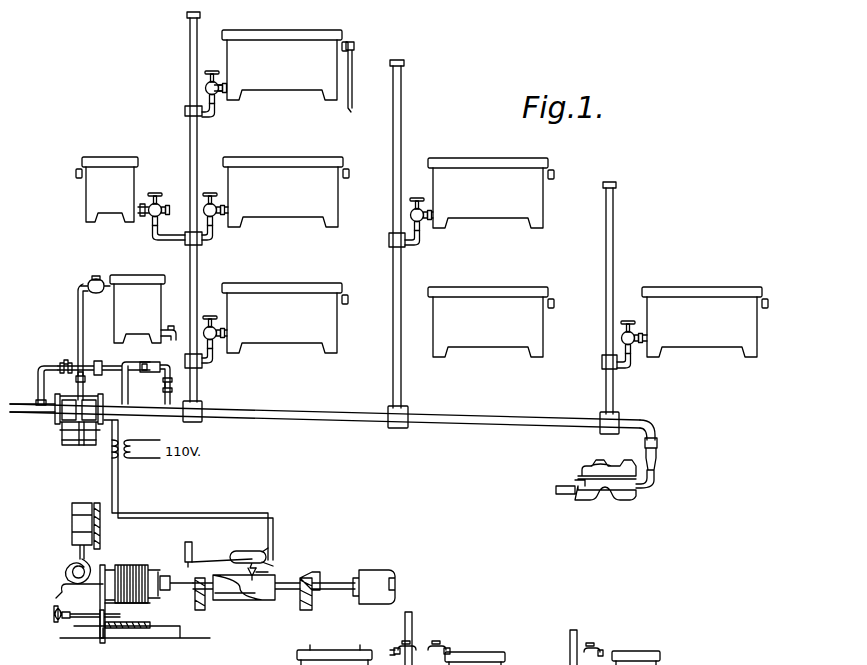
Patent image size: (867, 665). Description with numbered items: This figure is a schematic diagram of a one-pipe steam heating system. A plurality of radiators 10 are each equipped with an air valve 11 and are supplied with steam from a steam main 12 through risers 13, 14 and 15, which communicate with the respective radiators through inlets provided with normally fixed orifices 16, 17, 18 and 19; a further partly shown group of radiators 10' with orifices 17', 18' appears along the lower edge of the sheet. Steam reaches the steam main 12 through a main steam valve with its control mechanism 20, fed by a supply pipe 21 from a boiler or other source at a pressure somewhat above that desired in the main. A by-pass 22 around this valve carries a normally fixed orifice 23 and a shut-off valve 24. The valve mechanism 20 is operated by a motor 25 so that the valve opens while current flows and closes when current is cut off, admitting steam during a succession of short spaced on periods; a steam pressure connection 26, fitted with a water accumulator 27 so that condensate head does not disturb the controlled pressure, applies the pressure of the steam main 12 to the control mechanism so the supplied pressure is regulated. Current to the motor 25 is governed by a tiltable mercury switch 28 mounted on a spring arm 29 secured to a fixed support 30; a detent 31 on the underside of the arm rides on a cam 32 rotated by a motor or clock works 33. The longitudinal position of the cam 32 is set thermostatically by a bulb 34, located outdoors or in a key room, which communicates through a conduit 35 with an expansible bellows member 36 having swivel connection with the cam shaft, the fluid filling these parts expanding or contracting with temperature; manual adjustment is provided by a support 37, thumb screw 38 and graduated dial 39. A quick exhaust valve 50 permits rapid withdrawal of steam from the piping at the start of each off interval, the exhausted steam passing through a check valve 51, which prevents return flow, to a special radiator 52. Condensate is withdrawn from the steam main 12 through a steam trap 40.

The radiator 10 is at (422, 193).
The air valve 11 is at (354, 50).
The steam main 12 is at (252, 412).
The riser 13 is at (198, 274).
The riser 14 is at (403, 272).
The riser 15 is at (614, 272).
The normally fixed orifice 16 is at (216, 100).
The normally fixed orifice 17 is at (161, 200).
The normally fixed orifice 18 is at (214, 199).
The normally fixed orifice 19 is at (215, 322).
The main steam valve 20 is at (64, 434).
The supply pipe 21 is at (15, 398).
The by-pass 22 is at (40, 362).
The normally fixed orifice 23 is at (98, 360).
The shut-off valve 24 is at (65, 360).
The motor 25 is at (82, 440).
The steam pressure connection 26 is at (163, 384).
The water accumulator 27 is at (150, 362).
The tiltable mercury switch 28 is at (262, 556).
The spring arm 29 is at (215, 560).
The fixed support 30 is at (186, 544).
The detent 31 is at (262, 572).
The cam 32 is at (242, 594).
The motor or clock works 33 is at (378, 574).
The bulb 34 is at (78, 526).
The conduit 35 is at (66, 574).
The expansible bellows member 36 is at (120, 563).
The support 37 is at (100, 592).
The thumb screw 38 is at (62, 622).
The graduated dial 39 is at (128, 632).
The steam trap 40 is at (630, 490).
The quick exhaust valve 50 is at (74, 379).
The check valve 51 is at (92, 280).
The special radiator 52 is at (131, 290).
The valve 17' is at (392, 637).
The valve 18' is at (451, 637).
The tank 10' is at (501, 638).